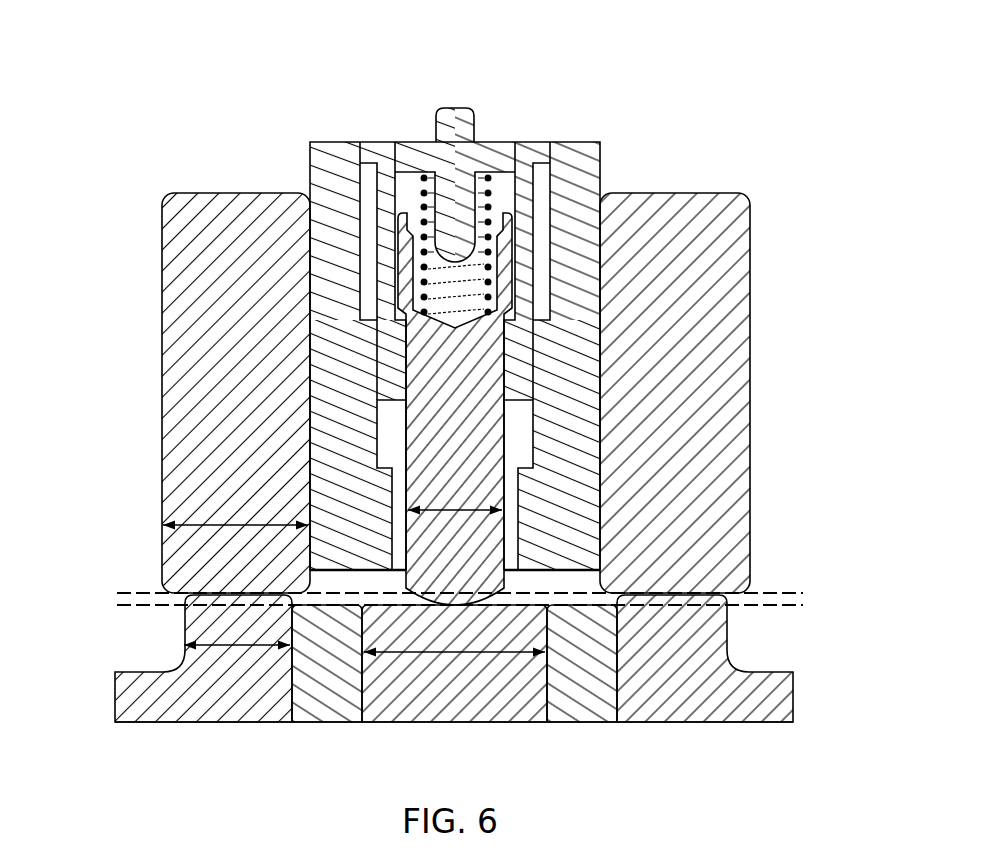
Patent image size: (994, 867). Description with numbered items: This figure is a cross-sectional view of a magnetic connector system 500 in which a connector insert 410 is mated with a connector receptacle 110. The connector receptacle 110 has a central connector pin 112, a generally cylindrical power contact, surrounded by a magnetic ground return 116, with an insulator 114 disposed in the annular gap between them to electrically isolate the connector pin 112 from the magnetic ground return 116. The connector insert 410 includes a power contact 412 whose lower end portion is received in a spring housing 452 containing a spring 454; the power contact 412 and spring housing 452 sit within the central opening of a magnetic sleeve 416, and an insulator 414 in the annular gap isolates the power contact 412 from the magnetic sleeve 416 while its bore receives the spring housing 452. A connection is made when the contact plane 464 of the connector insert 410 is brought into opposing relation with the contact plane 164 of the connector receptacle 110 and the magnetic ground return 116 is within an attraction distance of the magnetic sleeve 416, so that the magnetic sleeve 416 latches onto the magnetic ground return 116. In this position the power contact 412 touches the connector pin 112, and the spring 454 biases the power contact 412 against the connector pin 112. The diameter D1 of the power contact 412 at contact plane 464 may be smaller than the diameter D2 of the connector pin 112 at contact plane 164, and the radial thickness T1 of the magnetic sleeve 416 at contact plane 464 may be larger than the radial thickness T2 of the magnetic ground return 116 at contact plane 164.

The magnetic connector system 500 is at (389, 104).
The connector insert 410 is at (584, 136).
The power contact 412 is at (430, 385).
The insulator 414 is at (588, 387).
The magnetic sleeve 416 is at (727, 295).
The spring housing 452 is at (522, 197).
The spring 454 is at (488, 175).
The contact plane 464 is at (783, 592).
The contact plane 164 is at (121, 609).
The connector receptacle 110 is at (259, 730).
The connector pin 112 is at (443, 708).
The insulator 114 is at (568, 707).
The magnetic ground return 116 is at (680, 707).
The radial thickness T1 is at (205, 643).
The radial thickness T2 is at (190, 523).
The diameter D1 is at (475, 508).
The diameter D2 is at (393, 653).